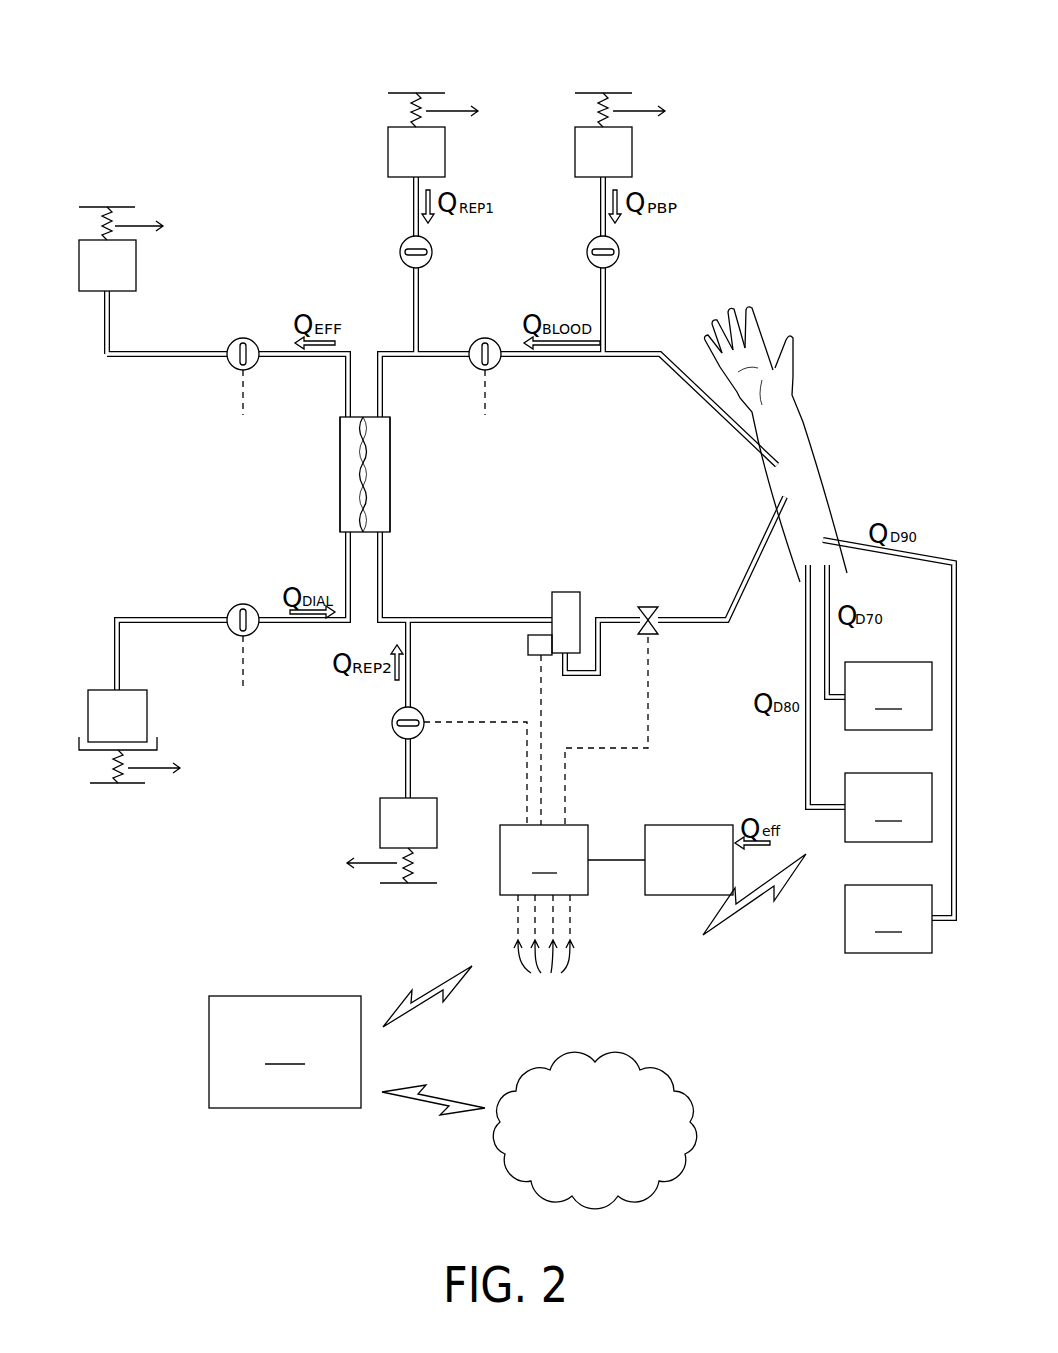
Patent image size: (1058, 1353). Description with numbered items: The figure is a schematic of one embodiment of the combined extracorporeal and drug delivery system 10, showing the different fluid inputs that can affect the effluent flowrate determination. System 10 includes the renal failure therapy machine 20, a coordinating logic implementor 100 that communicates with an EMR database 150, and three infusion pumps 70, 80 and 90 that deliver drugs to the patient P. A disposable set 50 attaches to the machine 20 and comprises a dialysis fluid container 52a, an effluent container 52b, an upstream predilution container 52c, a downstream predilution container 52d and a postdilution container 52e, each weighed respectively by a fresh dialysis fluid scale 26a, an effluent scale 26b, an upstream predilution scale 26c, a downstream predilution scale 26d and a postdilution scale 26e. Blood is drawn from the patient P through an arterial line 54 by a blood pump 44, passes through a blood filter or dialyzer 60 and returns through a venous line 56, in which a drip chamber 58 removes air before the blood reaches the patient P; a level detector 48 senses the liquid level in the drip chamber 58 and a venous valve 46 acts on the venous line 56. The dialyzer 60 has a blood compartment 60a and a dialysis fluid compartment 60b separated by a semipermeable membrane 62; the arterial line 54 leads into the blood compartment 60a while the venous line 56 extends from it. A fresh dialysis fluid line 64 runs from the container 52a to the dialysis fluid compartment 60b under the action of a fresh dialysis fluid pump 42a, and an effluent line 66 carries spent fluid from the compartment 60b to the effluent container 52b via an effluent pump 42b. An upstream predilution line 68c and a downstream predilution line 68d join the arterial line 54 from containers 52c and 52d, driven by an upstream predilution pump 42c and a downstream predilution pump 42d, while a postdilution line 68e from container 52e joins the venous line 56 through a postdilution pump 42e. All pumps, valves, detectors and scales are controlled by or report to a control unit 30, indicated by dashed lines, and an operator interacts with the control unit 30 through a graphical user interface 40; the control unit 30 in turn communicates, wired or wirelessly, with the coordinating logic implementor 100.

The combined extracorporeal and drug delivery system 10 is at (679, 44).
The renal failure therapy machine 20 is at (102, 364).
The fresh dialysis fluid scale 26a is at (116, 767).
The effluent scale 26b is at (105, 217).
The upstream predilution scale 26c is at (597, 100).
The downstream predilution scale 26d is at (410, 100).
The postdilution scale 26e is at (415, 875).
The control unit 30 is at (572, 915).
The graphical user interface 40 is at (680, 825).
The fresh dialysis fluid pump 42a is at (228, 605).
The effluent pump 42b is at (258, 340).
The upstream predilution pump 42c is at (619, 258).
The downstream predilution pump 42d is at (401, 258).
The postdilution pump 42e is at (392, 723).
The blood pump 44 is at (483, 338).
The venous valve 46 is at (648, 604).
The level detector 48 is at (528, 646).
The disposable set 50 is at (186, 492).
The dialysis fluid container 52a is at (130, 710).
The effluent container 52b is at (136, 265).
The upstream predilution container 52c is at (632, 152).
The downstream predilution container 52d is at (388, 152).
The postdilution container 52e is at (380, 820).
The arterial line 54 is at (575, 358).
The venous line 56 is at (450, 617).
The drip chamber 58 is at (568, 590).
The blood filter or dialyzer 60 is at (397, 516).
The blood compartment 60a is at (392, 452).
The dialysis fluid compartment 60b is at (345, 492).
The semipermeable membrane 62 is at (347, 455).
The fresh dialysis fluid line 64 is at (152, 617).
The effluent line 66 is at (162, 358).
The upstream predilution line 68c is at (606, 310).
The downstream predilution line 68d is at (413, 310).
The postdilution line 68e is at (405, 770).
The infusion pump 70 is at (888, 696).
The infusion pump 80 is at (888, 807).
The infusion pump 90 is at (888, 919).
The coordinating logic implementor 100 is at (285, 1052).
The EMR database 150 is at (664, 1080).
The patient P is at (782, 432).